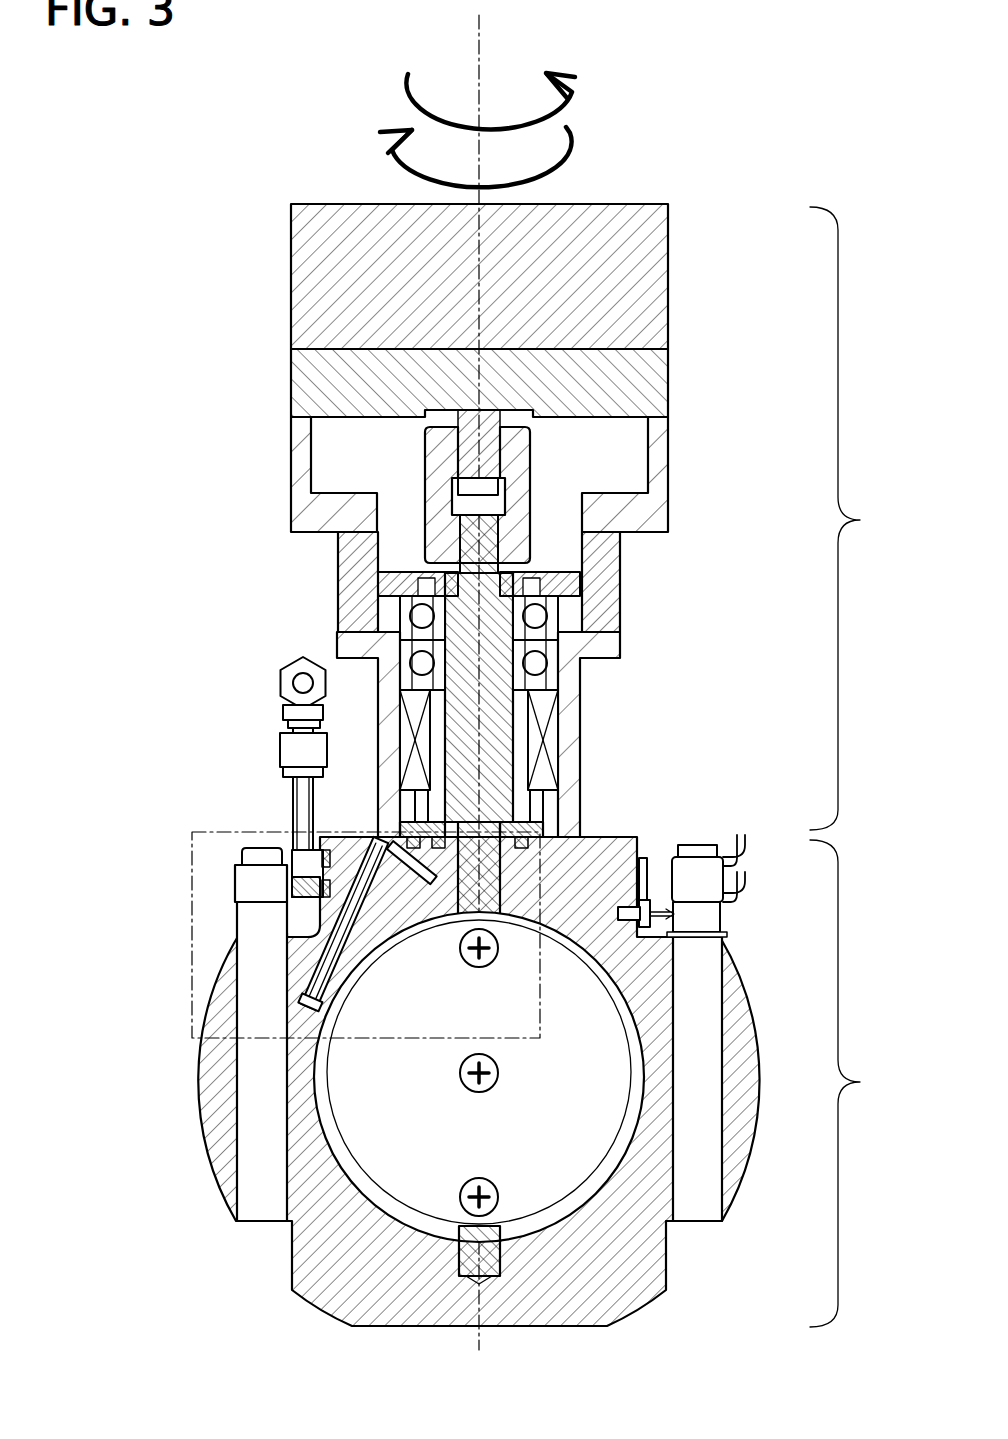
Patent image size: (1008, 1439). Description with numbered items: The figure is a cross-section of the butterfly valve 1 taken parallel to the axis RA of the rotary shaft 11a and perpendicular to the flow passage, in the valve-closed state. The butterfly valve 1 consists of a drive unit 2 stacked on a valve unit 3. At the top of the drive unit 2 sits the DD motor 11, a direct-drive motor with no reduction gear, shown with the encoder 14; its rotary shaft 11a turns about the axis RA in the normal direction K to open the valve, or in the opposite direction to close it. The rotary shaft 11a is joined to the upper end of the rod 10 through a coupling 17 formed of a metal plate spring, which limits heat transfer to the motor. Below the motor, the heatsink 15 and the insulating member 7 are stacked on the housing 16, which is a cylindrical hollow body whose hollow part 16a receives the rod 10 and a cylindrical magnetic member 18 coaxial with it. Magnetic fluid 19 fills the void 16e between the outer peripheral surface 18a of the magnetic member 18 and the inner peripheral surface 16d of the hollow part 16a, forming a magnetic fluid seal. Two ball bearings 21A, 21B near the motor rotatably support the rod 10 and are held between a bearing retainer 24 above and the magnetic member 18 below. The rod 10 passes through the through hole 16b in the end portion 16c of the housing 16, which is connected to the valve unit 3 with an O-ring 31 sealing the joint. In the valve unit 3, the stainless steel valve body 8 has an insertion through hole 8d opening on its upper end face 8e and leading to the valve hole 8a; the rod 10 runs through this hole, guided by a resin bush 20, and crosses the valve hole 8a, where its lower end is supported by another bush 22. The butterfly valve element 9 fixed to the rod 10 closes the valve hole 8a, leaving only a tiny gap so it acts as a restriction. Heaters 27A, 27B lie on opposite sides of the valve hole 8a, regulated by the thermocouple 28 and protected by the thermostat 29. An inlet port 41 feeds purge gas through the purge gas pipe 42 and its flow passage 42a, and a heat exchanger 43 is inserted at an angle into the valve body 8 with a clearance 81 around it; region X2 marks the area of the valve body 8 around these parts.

The butterfly valve 1 is at (217, 138).
The drive unit 2 is at (845, 518).
The valve unit 3 is at (845, 1083).
The insulating member 7 is at (350, 560).
The valve body 8 is at (648, 852).
The valve hole 8a is at (635, 1128).
The insertion through hole 8d is at (410, 825).
The end face 8e is at (578, 838).
The butterfly valve element 9 is at (397, 1162).
The rod 10 is at (460, 630).
The DD motor 11 is at (305, 270).
The rotary shaft 11a is at (468, 453).
The encoder 14 is at (320, 390).
The heatsink 15 is at (305, 514).
The housing 16 is at (380, 688).
The hollow part 16a is at (560, 702).
The through hole 16b is at (600, 845).
The end portion 16c is at (400, 830).
The inner peripheral surface 16d is at (560, 730).
The void 16e is at (560, 690).
The coupling 17 is at (432, 487).
The magnetic member 18 is at (560, 753).
The outer peripheral surface 18a is at (560, 785).
The magnetic fluid 19 is at (548, 700).
The bush 20 is at (479, 1077).
The ball bearing 21A is at (562, 600).
The ball bearing 21B is at (560, 650).
The bush 22 is at (459, 1257).
The bearing retainer 24 is at (590, 563).
The heater 27A is at (258, 1170).
The heater 27B is at (700, 1110).
The thermocouple 28 is at (660, 920).
The thermostat 29 is at (726, 910).
The O-ring 31 is at (578, 795).
The inlet port 41 is at (290, 680).
The purge gas pipe 42 is at (295, 800).
The flow passage 42a is at (283, 748).
The heat exchanger 43 is at (292, 880).
The clearance 81 is at (325, 962).
The normal direction K is at (578, 105).
The axis RA is at (479, 45).
The enlarged region X2 is at (240, 832).